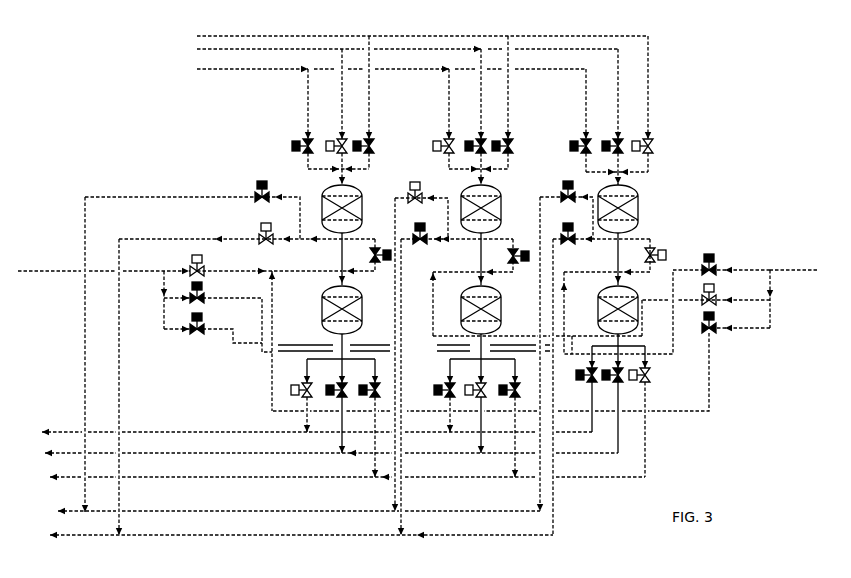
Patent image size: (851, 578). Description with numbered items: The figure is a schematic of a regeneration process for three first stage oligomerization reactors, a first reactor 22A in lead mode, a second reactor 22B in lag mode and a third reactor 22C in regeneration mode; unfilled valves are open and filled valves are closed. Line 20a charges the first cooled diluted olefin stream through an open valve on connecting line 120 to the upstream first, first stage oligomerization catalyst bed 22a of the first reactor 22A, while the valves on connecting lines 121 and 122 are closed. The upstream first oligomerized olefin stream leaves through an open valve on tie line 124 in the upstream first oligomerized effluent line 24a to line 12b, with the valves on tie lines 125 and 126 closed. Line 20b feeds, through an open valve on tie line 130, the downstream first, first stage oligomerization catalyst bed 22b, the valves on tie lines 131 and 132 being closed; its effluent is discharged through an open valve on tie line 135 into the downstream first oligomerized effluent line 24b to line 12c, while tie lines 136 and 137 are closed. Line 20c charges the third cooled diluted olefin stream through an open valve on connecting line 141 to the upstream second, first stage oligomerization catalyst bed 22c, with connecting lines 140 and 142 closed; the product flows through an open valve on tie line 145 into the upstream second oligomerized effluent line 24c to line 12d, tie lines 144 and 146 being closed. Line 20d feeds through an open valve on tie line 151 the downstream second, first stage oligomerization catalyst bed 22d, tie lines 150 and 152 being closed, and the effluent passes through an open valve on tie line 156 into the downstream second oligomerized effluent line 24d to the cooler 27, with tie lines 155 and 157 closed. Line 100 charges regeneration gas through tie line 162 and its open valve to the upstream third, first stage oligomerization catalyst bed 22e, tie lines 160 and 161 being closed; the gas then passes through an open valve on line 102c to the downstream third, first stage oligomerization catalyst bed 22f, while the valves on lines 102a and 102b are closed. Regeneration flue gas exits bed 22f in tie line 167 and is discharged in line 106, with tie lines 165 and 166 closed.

The regeneration gas line 100 is at (261, 34).
The first cooled diluted olefin stream line 20a is at (240, 50).
The second cooled diluted olefin stream line 20b is at (60, 271).
The third cooled diluted olefin stream line 20c is at (238, 70).
The fourth cooled diluted olefin stream line 20d is at (792, 272).
The first reactor 22A is at (340, 274).
The second reactor 22B is at (485, 274).
The third reactor 22C is at (553, 268).
The upstream first, first stage oligomerization catalyst bed 22a is at (363, 211).
The downstream first, first stage oligomerization catalyst bed 22b is at (322, 310).
The upstream second, first stage oligomerization catalyst bed 22c is at (458, 198).
The downstream second, first stage oligomerization catalyst bed 22d is at (502, 308).
The upstream third, first stage oligomerization catalyst bed 22e is at (608, 191).
The downstream third, first stage oligomerization catalyst bed 22f is at (596, 313).
The line 102a is at (375, 239).
The line 102b is at (512, 239).
The line 102c is at (654, 236).
The connecting line 120 is at (342, 112).
The connecting line 121 is at (481, 112).
The connecting line 122 is at (618, 112).
The tie line 124 is at (293, 241).
The tie line 125 is at (448, 242).
The tie line 126 is at (592, 243).
The tie line 130 is at (245, 270).
The tie line 131 is at (252, 298).
The tie line 132 is at (254, 343).
The tie line 135 is at (305, 370).
The tie line 136 is at (449, 371).
The tie line 137 is at (589, 411).
The connecting line 140 is at (308, 118).
The connecting line 141 is at (449, 118).
The connecting line 142 is at (586, 118).
The tie line 144 is at (284, 199).
The tie line 145 is at (447, 200).
The tie line 146 is at (592, 200).
The tie line 150 is at (752, 327).
The tie line 151 is at (748, 299).
The tie line 152 is at (753, 268).
The tie line 155 is at (338, 444).
The tie line 156 is at (478, 445).
The tie line 157 is at (614, 450).
The tie line 160 is at (369, 112).
The tie line 161 is at (508, 118).
The tie line 162 is at (648, 125).
The tie line 165 is at (372, 468).
The tie line 166 is at (512, 469).
The tie line 167 is at (646, 462).
The line 12b is at (100, 537).
The line 12c is at (238, 432).
The line 12d is at (280, 511).
The cooler 27 is at (182, 453).
The regeneration flue gas line 106 is at (207, 477).
The upstream first oligomerized effluent line 24a is at (286, 544).
The downstream first oligomerized effluent line 24b is at (301, 427).
The upstream second oligomerized effluent line 24c is at (282, 504).
The downstream second oligomerized effluent line 24d is at (323, 448).